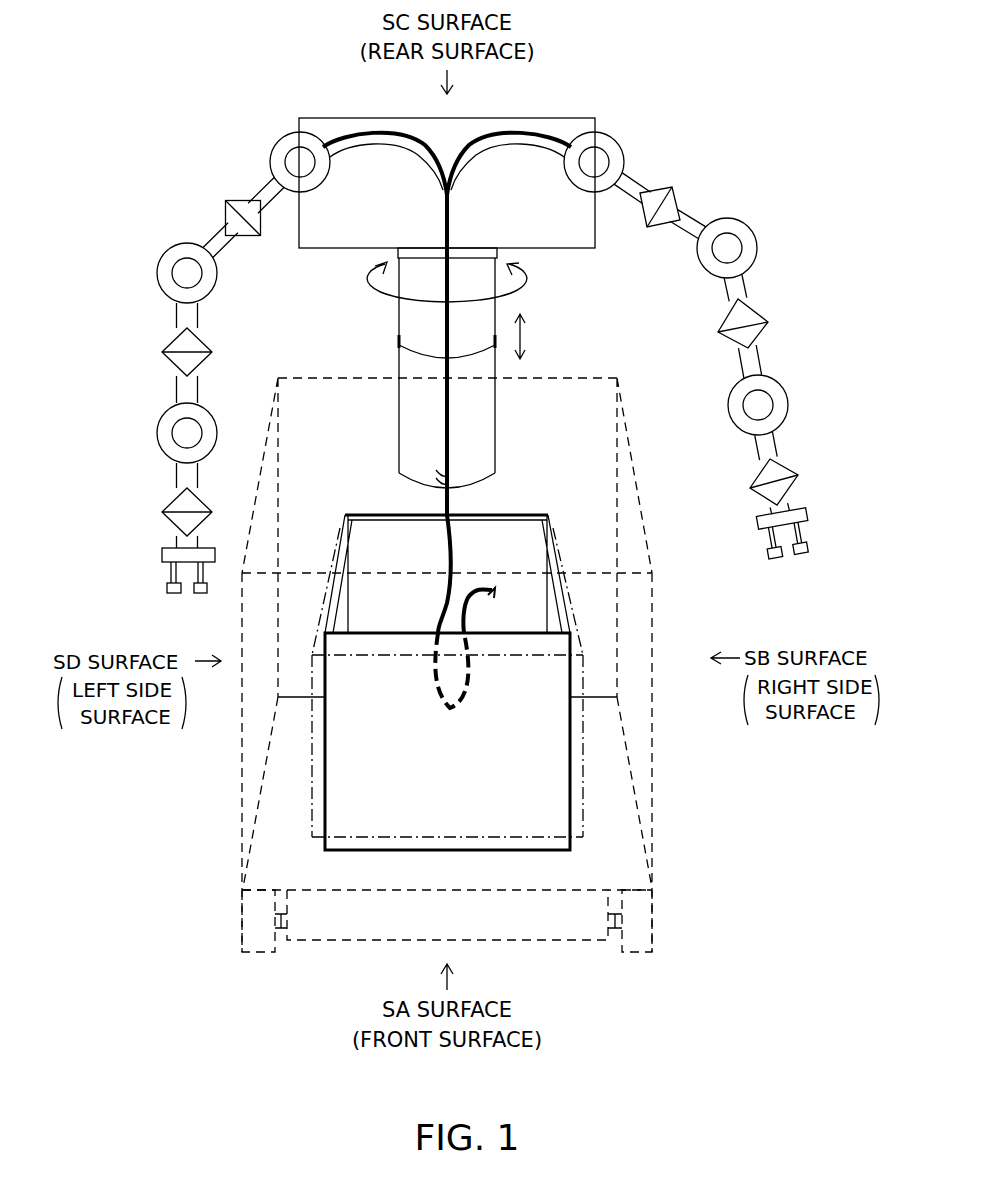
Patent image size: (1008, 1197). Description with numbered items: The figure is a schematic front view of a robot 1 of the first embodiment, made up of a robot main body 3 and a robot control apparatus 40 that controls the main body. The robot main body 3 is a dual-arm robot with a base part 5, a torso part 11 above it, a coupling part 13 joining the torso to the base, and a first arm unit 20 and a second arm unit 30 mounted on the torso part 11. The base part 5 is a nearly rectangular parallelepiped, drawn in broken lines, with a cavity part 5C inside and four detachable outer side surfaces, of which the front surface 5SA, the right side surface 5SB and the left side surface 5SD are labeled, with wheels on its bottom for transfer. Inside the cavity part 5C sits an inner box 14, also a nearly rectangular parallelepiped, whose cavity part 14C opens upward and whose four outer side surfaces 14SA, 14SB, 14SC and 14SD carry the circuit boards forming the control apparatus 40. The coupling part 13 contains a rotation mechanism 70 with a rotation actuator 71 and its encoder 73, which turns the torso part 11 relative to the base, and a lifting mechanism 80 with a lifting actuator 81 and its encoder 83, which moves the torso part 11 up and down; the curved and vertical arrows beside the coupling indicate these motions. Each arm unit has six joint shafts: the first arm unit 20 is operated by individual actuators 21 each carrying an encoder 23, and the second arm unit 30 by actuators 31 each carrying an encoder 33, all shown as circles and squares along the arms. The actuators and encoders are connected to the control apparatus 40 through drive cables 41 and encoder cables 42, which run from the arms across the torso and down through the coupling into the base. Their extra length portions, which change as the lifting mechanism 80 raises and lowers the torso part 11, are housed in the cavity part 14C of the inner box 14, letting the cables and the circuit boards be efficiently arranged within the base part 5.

The robot 1 is at (185, 70).
The robot main body 3 is at (585, 104).
The base part 5 is at (620, 378).
The cavity part 5C is at (600, 414).
The outer side surface 5SA is at (342, 863).
The outer side surface 5SB is at (645, 715).
The outer side surface 5SD is at (548, 378).
The torso part 11 is at (560, 249).
The coupling part 13 is at (288, 275).
The inner box 14 is at (573, 843).
The cavity part 14C is at (425, 612).
The outer side surface 14SA is at (525, 845).
The outer side surface 14SB is at (573, 638).
The outer side surface 14SC is at (545, 514).
The outer side surface 14SD is at (323, 640).
The first arm unit 20 is at (194, 167).
The actuator 21 is at (211, 345).
The encoder 23 is at (278, 138).
The second arm unit 30 is at (784, 169).
The actuator 31 is at (708, 330).
The encoder 33 is at (620, 140).
The robot control apparatus 40 is at (587, 747).
The drive cable 41 is at (520, 130).
The encoder cable 42 is at (520, 150).
The rotation mechanism 70 is at (412, 303).
The rotation actuator 71 is at (412, 303).
The encoder 73 is at (386, 259).
The lifting mechanism 80 is at (394, 412).
The lifting actuator 81 is at (394, 412).
The encoder 83 is at (399, 345).